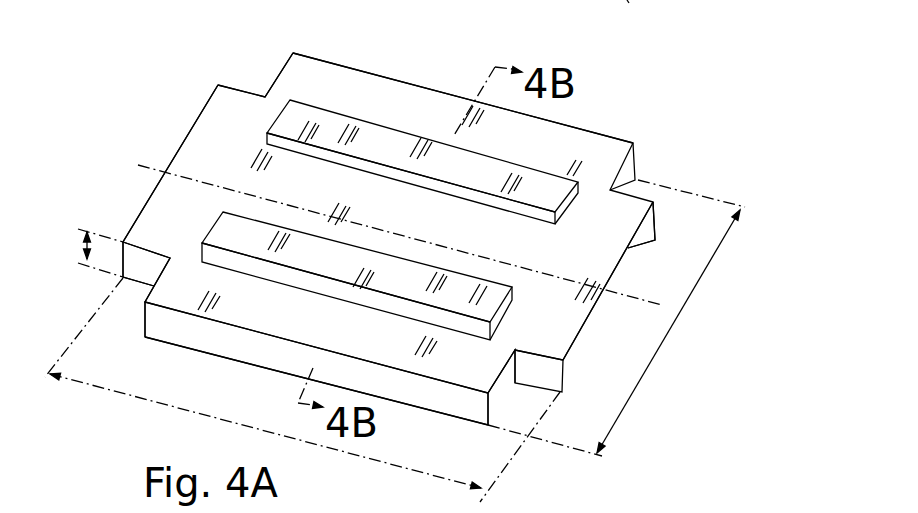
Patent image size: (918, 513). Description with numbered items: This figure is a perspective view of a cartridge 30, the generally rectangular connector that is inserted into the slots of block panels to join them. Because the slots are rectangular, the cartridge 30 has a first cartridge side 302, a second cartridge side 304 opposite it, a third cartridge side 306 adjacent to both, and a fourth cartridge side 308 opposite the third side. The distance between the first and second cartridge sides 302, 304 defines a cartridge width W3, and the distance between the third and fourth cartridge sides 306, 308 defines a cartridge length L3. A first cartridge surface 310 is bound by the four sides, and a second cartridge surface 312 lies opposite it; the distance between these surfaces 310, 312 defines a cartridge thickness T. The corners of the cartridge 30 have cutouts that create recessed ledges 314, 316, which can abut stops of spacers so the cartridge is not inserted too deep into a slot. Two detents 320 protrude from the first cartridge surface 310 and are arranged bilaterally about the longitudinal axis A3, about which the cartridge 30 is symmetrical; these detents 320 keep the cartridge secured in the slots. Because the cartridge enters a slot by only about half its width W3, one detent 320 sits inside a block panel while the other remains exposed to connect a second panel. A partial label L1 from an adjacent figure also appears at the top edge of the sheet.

The cartridge 30 is at (745, 115).
The first cartridge side 302 is at (606, 131).
The second cartridge side 304 is at (412, 392).
The third cartridge side 306 is at (645, 246).
The fourth cartridge side 308 is at (146, 198).
The first cartridge surface 310 is at (322, 97).
The second cartridge surface 312 is at (224, 359).
The recessed ledge 314 is at (497, 398).
The recessed ledge 316 is at (542, 373).
The detent 320 is at (397, 145).
The longitudinal axis A3 is at (143, 165).
The length dimension L1 is at (588, 0).
The cartridge length L3 is at (133, 395).
The cartridge thickness T is at (83, 246).
The cartridge width W3 is at (662, 346).